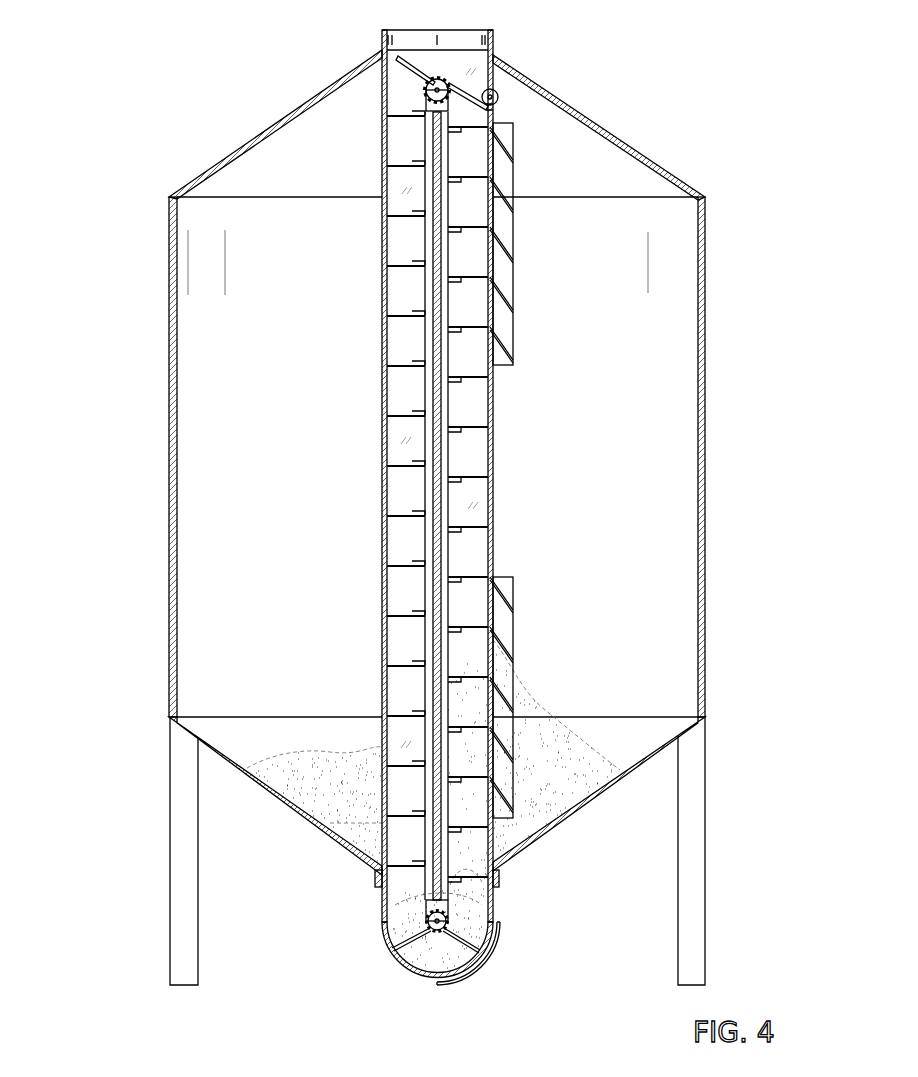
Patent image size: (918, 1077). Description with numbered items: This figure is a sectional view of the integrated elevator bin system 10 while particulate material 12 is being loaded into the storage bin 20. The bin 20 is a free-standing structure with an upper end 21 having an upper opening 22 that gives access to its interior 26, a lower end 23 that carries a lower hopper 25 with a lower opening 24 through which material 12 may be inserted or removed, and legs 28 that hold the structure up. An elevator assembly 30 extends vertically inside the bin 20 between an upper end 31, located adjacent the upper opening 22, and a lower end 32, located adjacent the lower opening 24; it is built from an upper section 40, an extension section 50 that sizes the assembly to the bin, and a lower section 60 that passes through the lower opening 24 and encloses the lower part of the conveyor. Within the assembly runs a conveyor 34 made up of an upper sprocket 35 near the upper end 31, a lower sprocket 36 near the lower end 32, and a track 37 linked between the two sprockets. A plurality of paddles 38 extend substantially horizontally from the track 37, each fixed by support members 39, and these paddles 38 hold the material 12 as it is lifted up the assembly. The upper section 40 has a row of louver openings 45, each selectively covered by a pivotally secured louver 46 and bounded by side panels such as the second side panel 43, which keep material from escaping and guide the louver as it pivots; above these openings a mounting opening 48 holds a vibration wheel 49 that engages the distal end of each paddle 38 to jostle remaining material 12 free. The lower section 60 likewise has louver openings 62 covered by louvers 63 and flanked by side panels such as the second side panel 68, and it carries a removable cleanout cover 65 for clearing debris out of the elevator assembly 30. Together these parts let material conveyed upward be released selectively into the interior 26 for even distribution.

The integrated elevator bin system 10 is at (175, 100).
The particulate material 12 is at (573, 767).
The storage bin 20 is at (447, 509).
The upper end 21 is at (584, 116).
The upper opening 22 is at (468, 33).
The lower end 23 is at (376, 873).
The lower opening 24 is at (478, 892).
The lower hopper 25 is at (574, 812).
The interior 26 is at (632, 457).
The legs 28 is at (172, 835).
The elevator assembly 30 is at (435, 526).
The upper end 31 is at (380, 107).
The lower end 32 is at (382, 912).
The conveyor 34 is at (455, 452).
The upper sprocket 35 is at (427, 90).
The lower sprocket 36 is at (437, 925).
The track 37 is at (440, 88).
The paddles 38 is at (412, 514).
The support members 39 is at (422, 500).
The upper section 40 is at (265, 338).
The second side panel 43 is at (513, 327).
The louver openings 45 is at (491, 177).
The louver 46 is at (636, 243).
The mounting opening 48 is at (491, 152).
The vibration wheel 49 is at (497, 108).
The extension section 50 is at (497, 482).
The lower section 60 is at (380, 695).
The louver openings 62 is at (513, 625).
The louver 63 is at (513, 650).
The cleanout cover 65 is at (495, 950).
The second side panel 68 is at (628, 697).